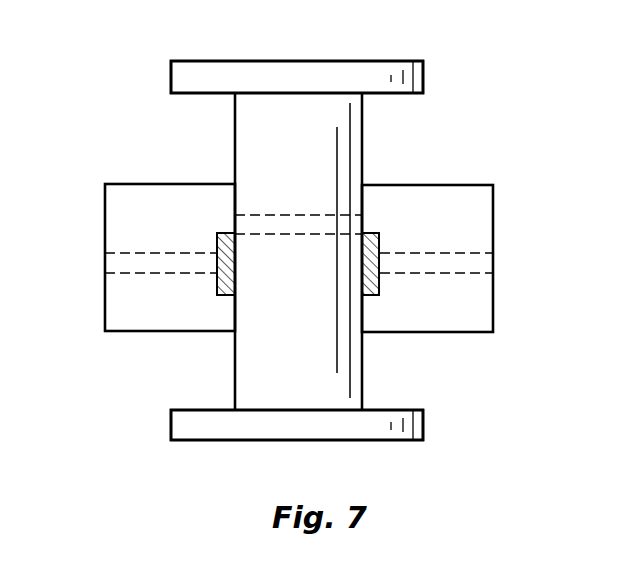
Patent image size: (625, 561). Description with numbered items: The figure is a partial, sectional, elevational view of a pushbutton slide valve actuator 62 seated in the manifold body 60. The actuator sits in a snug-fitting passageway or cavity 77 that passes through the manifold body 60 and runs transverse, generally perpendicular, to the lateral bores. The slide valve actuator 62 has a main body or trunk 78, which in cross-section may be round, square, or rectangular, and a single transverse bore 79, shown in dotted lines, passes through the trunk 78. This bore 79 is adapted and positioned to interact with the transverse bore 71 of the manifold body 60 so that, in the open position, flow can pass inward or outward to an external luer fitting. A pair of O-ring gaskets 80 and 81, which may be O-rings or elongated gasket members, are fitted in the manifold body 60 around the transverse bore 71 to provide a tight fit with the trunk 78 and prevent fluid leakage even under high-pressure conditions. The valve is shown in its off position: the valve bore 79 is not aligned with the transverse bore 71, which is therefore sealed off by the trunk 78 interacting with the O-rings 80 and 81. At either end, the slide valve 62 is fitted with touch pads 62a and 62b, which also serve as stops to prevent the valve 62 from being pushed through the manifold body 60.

The manifold body 60 is at (470, 223).
The slide valve actuator 62 is at (402, 63).
The touch pad 62a is at (202, 72).
The touch pad 62b is at (210, 425).
The transverse bore 71 is at (130, 273).
The cavity 77 is at (227, 216).
The trunk 78 is at (333, 128).
The transverse bore 79 is at (298, 212).
The O-ring gasket 80 is at (217, 296).
The O-ring gasket 81 is at (375, 297).